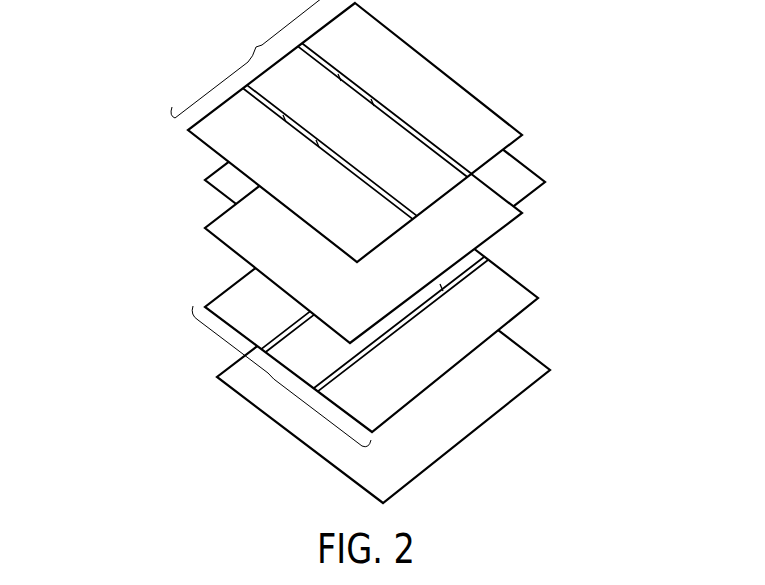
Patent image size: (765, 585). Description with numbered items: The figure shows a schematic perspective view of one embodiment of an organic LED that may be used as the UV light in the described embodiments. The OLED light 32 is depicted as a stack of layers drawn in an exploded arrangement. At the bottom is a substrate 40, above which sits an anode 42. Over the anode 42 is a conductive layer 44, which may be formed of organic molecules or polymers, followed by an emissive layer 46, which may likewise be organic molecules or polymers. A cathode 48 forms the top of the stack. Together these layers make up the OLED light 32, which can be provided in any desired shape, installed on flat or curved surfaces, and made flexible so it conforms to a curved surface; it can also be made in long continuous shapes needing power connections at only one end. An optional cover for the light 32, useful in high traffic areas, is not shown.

The OLED light 32 is at (592, 249).
The substrate 40 is at (480, 402).
The anode 42 is at (275, 381).
The conductive layer 44 is at (227, 227).
The emissive layer 46 is at (227, 178).
The cathode 48 is at (253, 46).